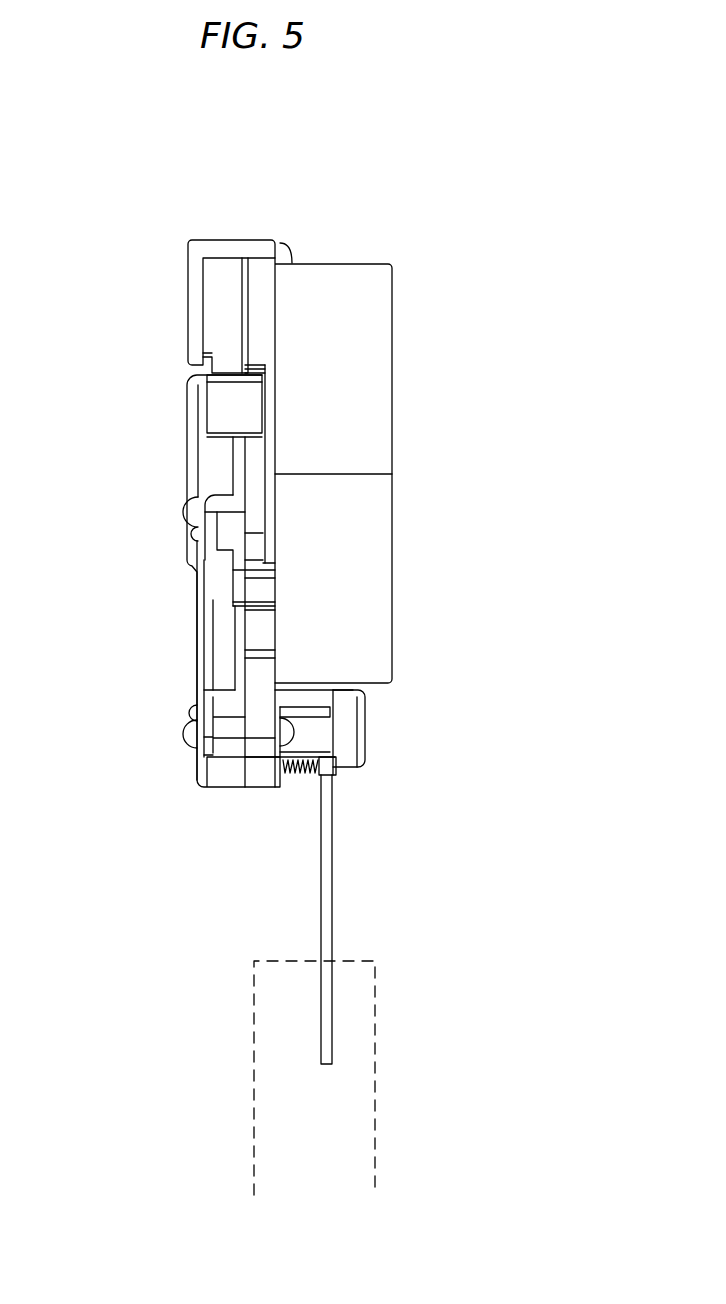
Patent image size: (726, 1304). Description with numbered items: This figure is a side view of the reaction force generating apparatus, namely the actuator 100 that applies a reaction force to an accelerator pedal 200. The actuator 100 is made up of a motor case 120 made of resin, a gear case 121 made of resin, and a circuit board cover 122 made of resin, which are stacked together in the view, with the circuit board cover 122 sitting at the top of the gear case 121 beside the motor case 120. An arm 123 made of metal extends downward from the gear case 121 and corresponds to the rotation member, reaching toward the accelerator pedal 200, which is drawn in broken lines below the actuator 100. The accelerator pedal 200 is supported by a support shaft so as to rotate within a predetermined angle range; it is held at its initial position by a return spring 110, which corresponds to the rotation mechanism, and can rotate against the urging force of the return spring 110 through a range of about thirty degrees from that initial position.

The actuator 100 is at (439, 206).
The return spring 110 is at (302, 775).
The motor case 120 is at (392, 402).
The gear case 121 is at (196, 646).
The circuit board cover 122 is at (188, 300).
The arm 123 is at (332, 873).
The accelerator pedal 200 is at (376, 1065).